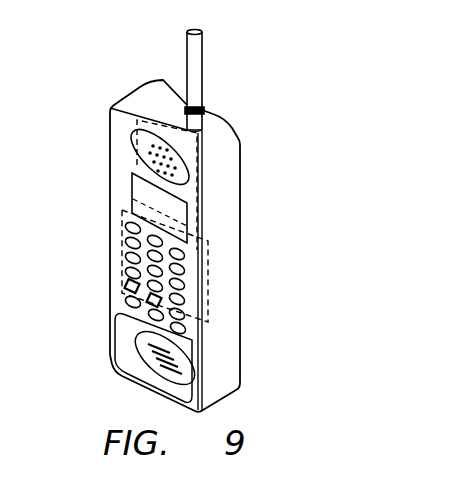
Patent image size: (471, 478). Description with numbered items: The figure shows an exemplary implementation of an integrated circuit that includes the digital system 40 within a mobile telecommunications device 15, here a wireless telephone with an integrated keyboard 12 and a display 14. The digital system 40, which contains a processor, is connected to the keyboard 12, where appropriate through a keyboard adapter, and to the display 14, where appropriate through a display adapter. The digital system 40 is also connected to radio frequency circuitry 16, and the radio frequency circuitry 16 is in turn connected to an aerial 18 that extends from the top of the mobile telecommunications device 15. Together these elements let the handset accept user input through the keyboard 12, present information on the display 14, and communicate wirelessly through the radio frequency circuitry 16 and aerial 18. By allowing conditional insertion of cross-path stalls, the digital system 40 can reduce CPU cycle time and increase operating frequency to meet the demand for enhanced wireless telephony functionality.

The keyboard 12 is at (122, 256).
The display 14 is at (132, 203).
The mobile telecommunications device 15 is at (240, 368).
The radio frequency (RF) circuitry 16 is at (137, 168).
The aerial 18 is at (197, 68).
The digital system 40 is at (208, 305).